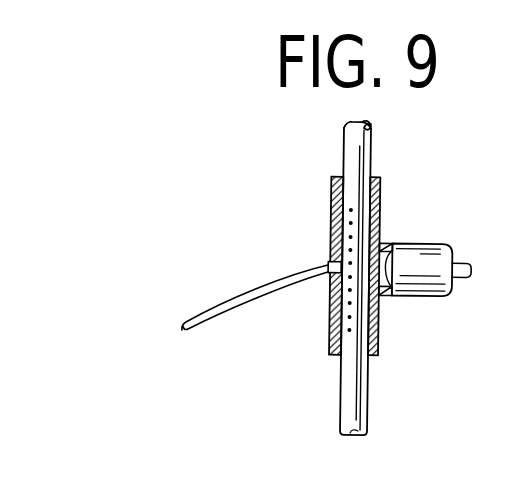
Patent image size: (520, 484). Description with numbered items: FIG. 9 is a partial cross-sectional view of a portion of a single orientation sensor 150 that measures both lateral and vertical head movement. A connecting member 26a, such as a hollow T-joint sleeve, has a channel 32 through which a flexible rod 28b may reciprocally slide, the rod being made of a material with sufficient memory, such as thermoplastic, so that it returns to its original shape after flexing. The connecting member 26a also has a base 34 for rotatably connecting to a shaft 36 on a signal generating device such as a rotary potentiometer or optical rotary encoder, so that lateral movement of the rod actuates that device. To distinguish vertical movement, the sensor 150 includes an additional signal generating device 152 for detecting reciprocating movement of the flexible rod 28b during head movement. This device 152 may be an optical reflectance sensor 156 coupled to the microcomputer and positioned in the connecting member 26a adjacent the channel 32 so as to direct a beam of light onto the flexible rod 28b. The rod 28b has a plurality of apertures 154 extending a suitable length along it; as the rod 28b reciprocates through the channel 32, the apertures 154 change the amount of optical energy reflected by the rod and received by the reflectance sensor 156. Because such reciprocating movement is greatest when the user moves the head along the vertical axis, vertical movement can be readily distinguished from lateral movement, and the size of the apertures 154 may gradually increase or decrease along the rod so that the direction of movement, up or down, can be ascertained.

The connecting member 26a is at (332, 190).
The flexible rod 28b is at (351, 411).
The channel 32 is at (338, 358).
The base 34 is at (410, 295).
The shaft 36 is at (461, 262).
The orientation sensor 150 is at (399, 211).
The signal generating device 152 is at (324, 281).
The apertures 154 is at (332, 246).
The optical reflectance sensor 156 is at (328, 265).